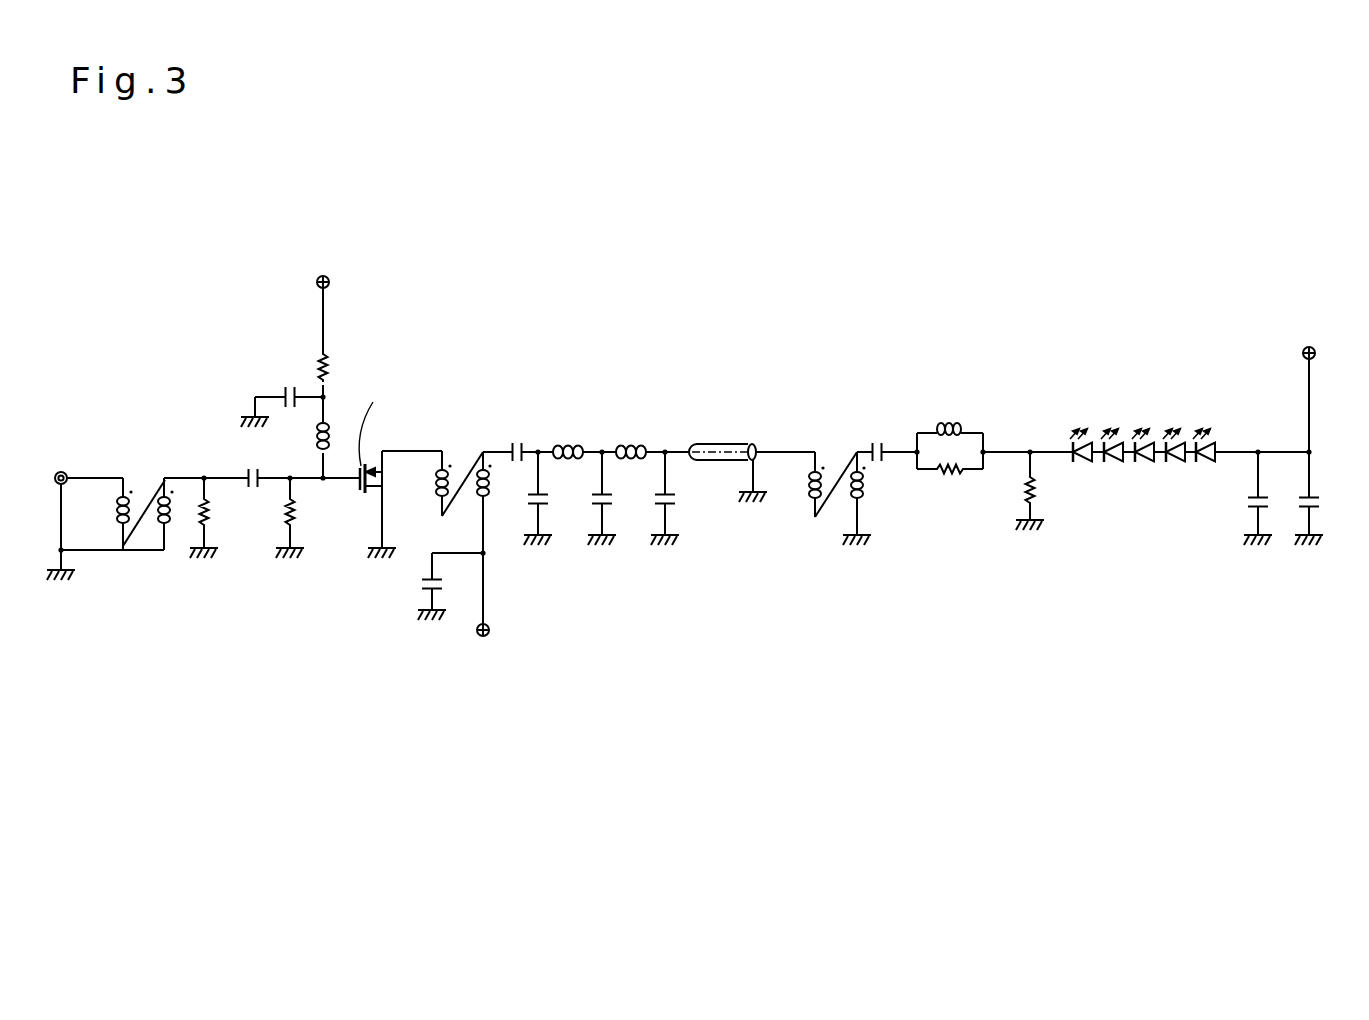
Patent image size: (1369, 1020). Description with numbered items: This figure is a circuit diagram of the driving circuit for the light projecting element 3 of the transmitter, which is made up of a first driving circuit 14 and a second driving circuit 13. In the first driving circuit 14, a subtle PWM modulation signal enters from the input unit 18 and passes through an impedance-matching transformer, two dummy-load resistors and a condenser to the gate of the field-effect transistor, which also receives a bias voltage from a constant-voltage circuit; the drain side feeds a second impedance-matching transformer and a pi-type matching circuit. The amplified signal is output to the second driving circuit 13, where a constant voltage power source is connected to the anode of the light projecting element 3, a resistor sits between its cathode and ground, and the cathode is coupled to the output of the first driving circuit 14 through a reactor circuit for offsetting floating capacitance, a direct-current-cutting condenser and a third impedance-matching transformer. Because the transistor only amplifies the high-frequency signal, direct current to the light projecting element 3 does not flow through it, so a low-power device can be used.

The light projecting element 3 is at (1063, 413).
The second driving circuit 13 is at (755, 638).
The first driving circuit 14 is at (48, 638).
The input unit 18 is at (61, 470).